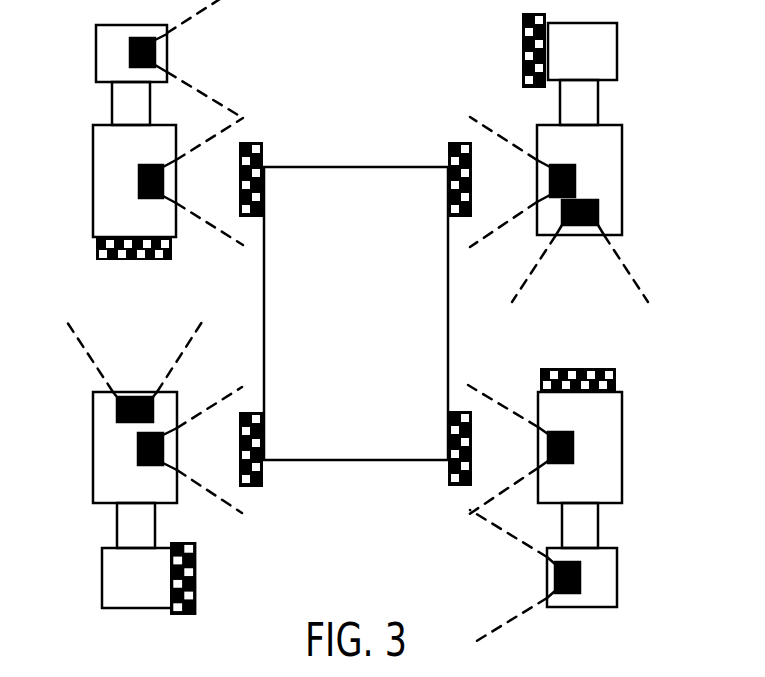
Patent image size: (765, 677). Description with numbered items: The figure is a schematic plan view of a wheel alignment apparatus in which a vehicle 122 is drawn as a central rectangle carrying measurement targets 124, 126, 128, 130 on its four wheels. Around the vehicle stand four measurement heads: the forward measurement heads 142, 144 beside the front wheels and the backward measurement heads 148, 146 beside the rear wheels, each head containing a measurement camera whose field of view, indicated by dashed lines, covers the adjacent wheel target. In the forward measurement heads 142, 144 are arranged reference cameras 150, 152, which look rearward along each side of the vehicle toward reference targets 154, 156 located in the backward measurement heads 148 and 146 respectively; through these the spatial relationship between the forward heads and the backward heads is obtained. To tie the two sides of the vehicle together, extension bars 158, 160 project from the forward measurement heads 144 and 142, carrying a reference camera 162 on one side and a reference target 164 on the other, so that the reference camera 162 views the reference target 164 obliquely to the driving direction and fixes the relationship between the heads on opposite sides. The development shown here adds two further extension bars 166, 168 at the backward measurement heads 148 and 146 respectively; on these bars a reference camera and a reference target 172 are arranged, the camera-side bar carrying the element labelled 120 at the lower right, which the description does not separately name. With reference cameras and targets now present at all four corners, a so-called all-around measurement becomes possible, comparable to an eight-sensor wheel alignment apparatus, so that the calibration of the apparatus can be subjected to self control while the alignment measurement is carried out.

The camera 120 is at (550, 575).
The vehicle 122 is at (448, 333).
The measurement target 124 is at (447, 147).
The measurement target 126 is at (265, 147).
The measurement target 128 is at (265, 417).
The measurement target 130 is at (447, 435).
The forward measurement head 142 is at (605, 177).
The forward measurement head 144 is at (118, 182).
The backward measurement head 146 is at (117, 473).
The backward measurement head 148 is at (600, 452).
The reference camera 150 is at (578, 230).
The reference camera 152 is at (132, 262).
The reference target 154 is at (593, 368).
The reference target 156 is at (133, 400).
The extension bar 158 is at (123, 100).
The extension bar 160 is at (585, 100).
The reference camera 162 is at (157, 50).
The reference target 164 is at (520, 52).
The extension bar 166 is at (587, 530).
The extension bar 168 is at (128, 525).
The reference target 172 is at (198, 577).